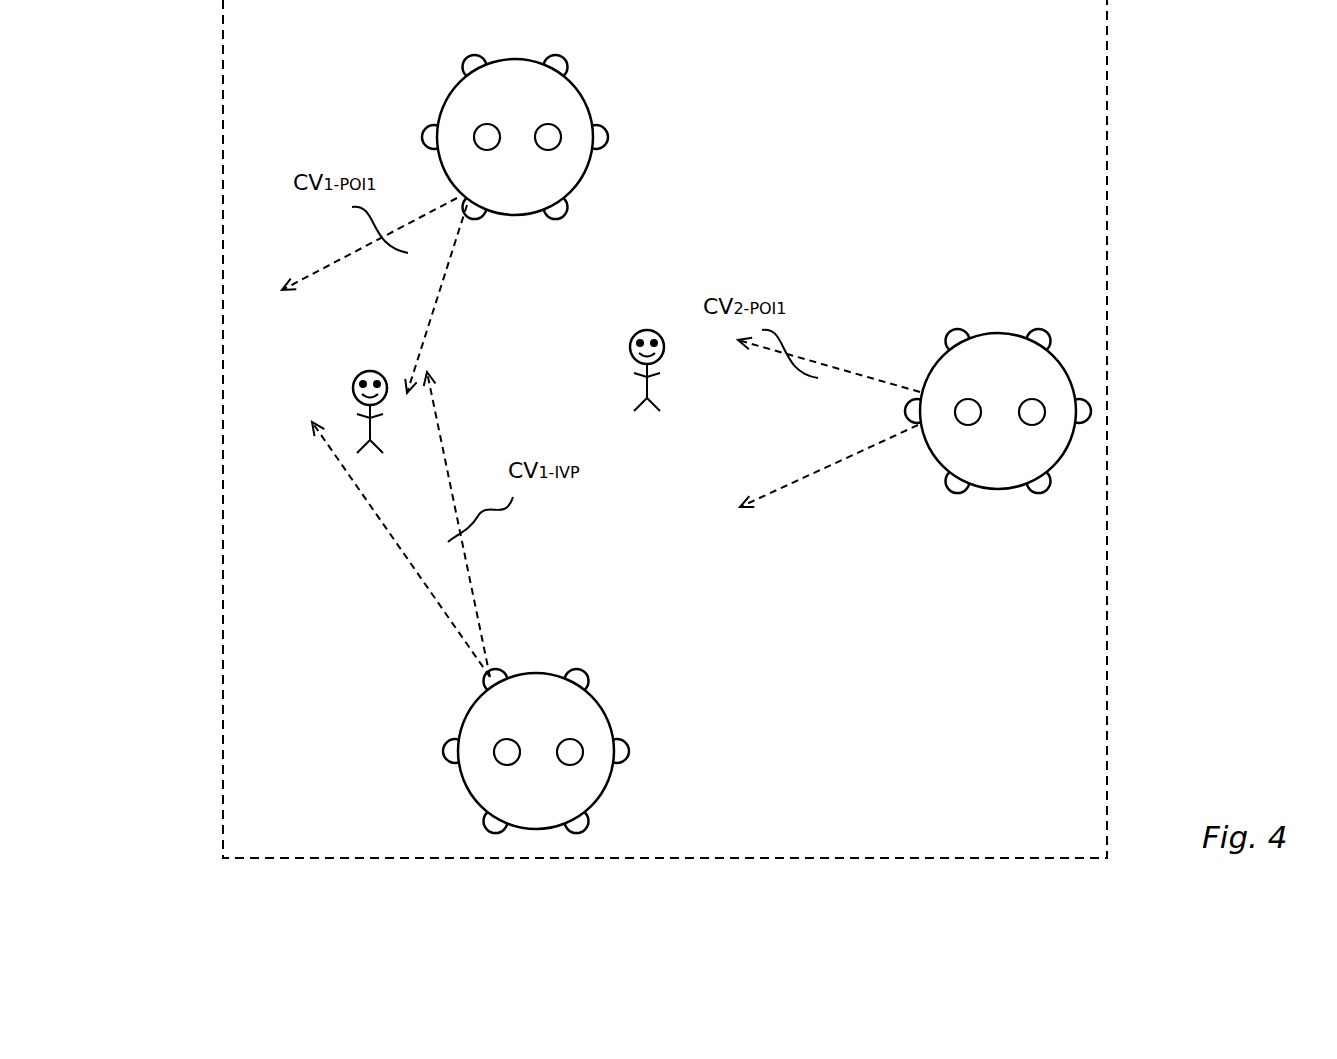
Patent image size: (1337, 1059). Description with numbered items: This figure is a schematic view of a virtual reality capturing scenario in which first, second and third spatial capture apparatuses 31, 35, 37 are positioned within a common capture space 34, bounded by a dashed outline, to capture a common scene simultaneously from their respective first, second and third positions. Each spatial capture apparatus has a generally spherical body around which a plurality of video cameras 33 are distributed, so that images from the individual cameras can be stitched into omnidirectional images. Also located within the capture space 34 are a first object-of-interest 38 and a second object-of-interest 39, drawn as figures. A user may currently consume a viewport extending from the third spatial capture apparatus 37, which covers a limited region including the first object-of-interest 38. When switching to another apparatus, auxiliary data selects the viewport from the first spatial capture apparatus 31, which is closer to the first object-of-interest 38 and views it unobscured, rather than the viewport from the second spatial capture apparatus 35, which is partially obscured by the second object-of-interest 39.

The first spatial capture apparatus 31 is at (518, 148).
The video camera 33 is at (549, 136).
The common capture space 34 is at (221, 167).
The second spatial capture apparatus 35 is at (922, 376).
The third spatial capture apparatus 37 is at (461, 713).
The first object-of-interest 38 is at (358, 376).
The second object-of-interest 39 is at (633, 335).